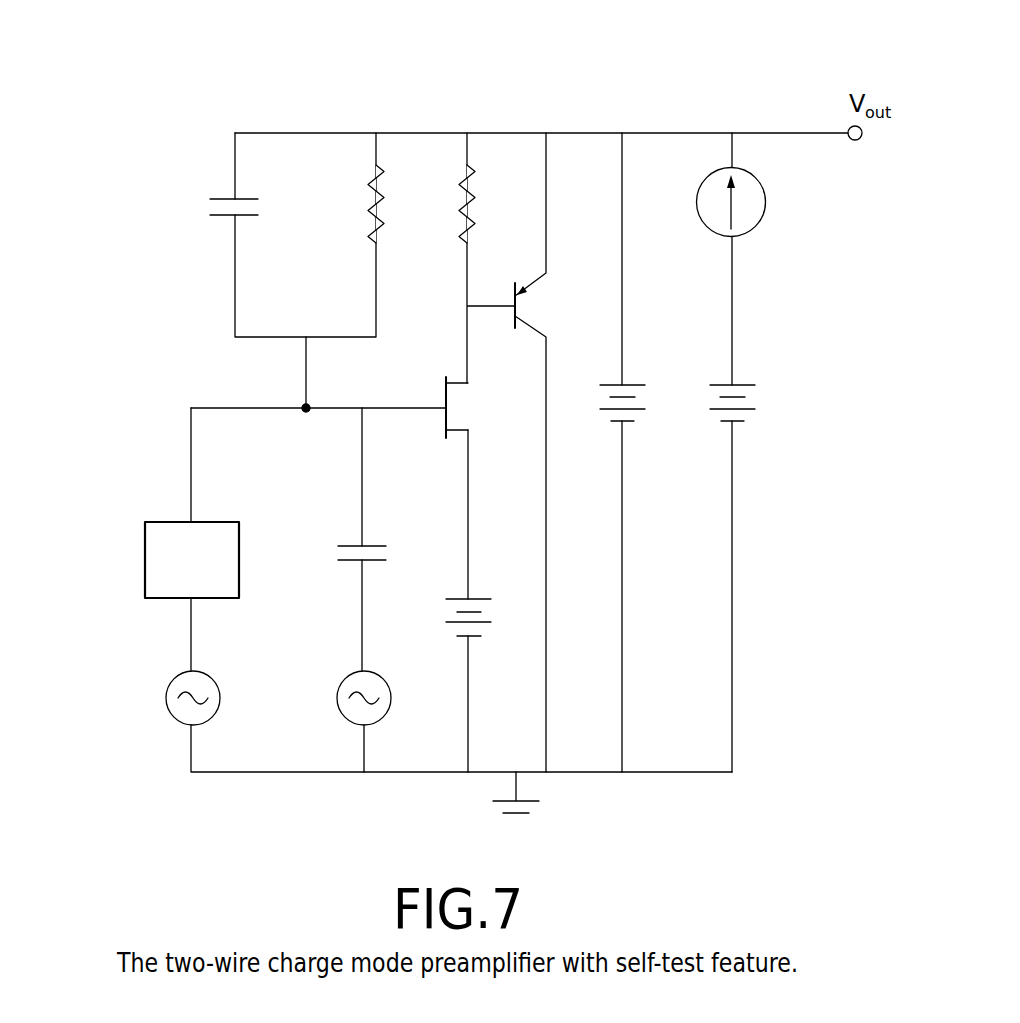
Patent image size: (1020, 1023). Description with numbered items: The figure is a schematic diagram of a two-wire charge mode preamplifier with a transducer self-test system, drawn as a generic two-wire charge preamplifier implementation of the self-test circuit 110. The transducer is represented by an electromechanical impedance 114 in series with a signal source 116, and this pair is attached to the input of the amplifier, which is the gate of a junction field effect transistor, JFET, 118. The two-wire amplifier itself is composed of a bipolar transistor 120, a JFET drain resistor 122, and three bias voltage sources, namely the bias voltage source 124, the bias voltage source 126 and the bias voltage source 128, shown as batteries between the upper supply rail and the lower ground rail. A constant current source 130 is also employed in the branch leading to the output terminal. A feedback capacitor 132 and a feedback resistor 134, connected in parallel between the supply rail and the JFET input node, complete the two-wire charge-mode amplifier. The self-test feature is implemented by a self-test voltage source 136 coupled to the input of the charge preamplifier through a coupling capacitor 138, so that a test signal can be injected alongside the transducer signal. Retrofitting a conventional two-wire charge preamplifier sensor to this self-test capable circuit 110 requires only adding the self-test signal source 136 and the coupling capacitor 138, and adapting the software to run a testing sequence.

The self-test circuit 110 is at (138, 110).
The electromechanical impedance 114 is at (145, 560).
The signal source 116 is at (166, 688).
The junction field effect transistor 118 is at (437, 430).
The bipolar transistor 120 is at (541, 330).
The JFET drain resistor 122 is at (477, 176).
The bias voltage source 124 is at (483, 643).
The bias voltage source 126 is at (640, 428).
The bias voltage source 128 is at (752, 428).
The constant current source 130 is at (770, 193).
The feedback capacitor 132 is at (247, 223).
The feedback resistor 134 is at (378, 243).
The self-test voltage source 136 is at (346, 673).
The coupling capacitor 138 is at (350, 537).